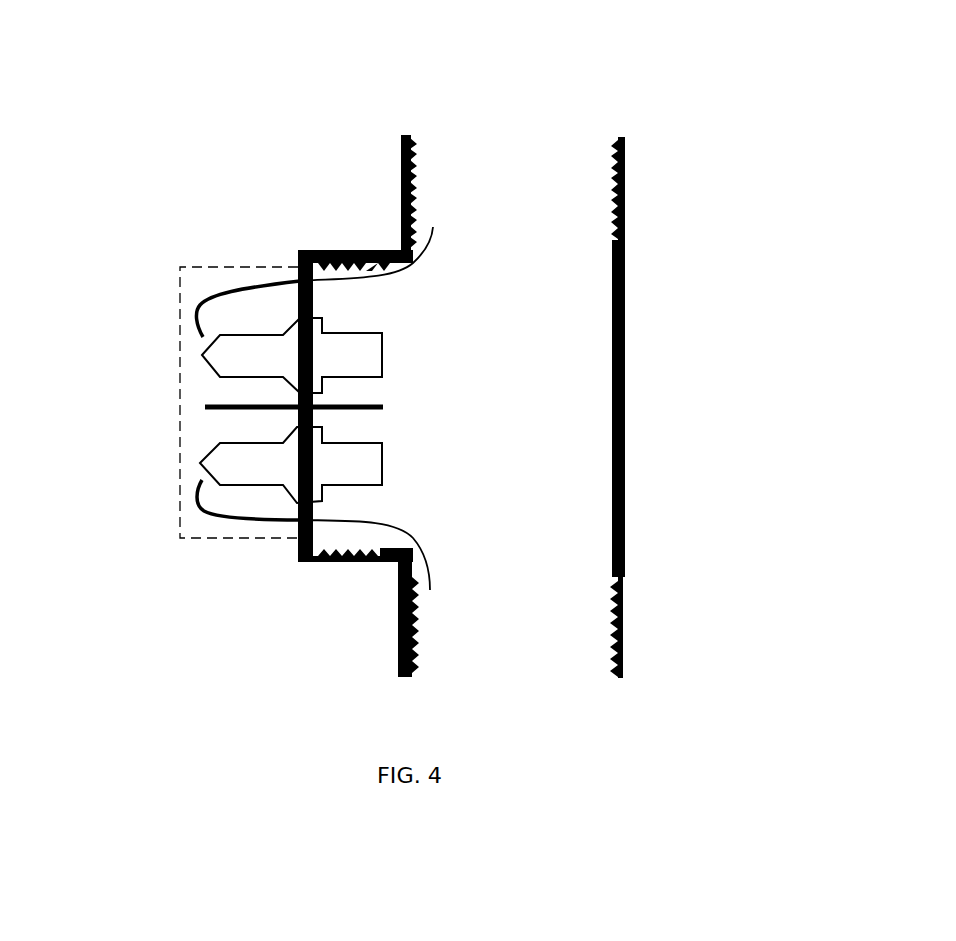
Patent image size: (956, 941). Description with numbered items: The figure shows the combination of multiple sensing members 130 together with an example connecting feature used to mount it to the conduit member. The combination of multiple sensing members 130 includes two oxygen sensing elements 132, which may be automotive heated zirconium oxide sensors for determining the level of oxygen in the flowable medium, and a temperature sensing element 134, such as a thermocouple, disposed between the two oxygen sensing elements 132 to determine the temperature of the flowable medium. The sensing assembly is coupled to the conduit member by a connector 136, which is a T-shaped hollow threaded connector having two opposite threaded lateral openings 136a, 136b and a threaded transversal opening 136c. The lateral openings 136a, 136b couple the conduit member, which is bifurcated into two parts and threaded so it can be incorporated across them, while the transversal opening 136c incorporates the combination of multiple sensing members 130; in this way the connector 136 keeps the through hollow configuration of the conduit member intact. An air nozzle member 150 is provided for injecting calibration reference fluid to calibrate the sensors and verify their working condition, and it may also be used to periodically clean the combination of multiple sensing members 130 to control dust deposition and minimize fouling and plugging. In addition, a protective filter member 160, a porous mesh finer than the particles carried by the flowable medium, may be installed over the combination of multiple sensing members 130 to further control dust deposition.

The combination of multiple sensing members 130 is at (186, 228).
The oxygen sensing element 132 is at (193, 362).
The temperature sensing element 134 is at (197, 403).
The connector 136 is at (692, 154).
The threaded lateral opening 136a is at (632, 202).
The threaded lateral opening 136b is at (631, 645).
The threaded transversal opening 136c is at (320, 573).
The air nozzle member 150 is at (193, 298).
The protective filter member 160 is at (199, 548).